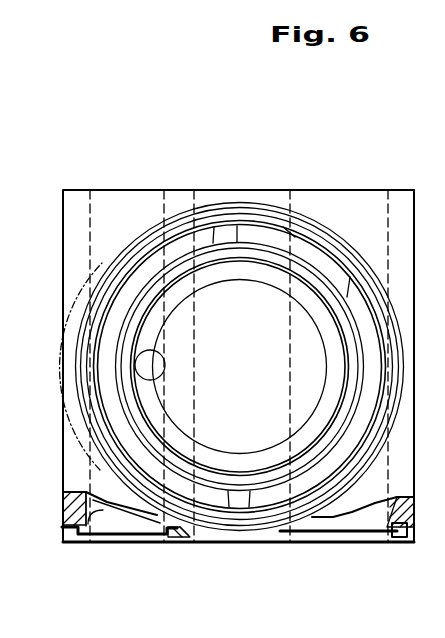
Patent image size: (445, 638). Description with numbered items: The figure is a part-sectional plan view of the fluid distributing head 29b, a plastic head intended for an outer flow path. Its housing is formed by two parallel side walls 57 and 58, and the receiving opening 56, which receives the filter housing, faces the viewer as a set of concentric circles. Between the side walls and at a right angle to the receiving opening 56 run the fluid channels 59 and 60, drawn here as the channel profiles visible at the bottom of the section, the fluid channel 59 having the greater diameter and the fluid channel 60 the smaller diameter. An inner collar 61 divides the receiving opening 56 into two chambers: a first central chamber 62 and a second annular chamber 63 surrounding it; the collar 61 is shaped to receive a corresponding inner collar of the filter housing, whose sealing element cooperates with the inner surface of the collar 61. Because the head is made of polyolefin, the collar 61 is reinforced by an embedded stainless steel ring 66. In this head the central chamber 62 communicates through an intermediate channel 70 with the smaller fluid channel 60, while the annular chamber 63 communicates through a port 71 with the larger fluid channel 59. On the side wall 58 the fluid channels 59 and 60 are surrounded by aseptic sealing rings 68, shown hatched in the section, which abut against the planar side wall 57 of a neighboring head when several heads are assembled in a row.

The fluid distributing head 29b is at (238, 304).
The receiving opening 56 is at (150, 250).
The side wall 57 is at (325, 189).
The side wall 58 is at (0, 224).
The fluid channel 59 is at (365, 545).
The fluid channel 60 is at (93, 543).
The collar 61 is at (128, 317).
The central chamber 62 is at (218, 272).
The annular chamber 63 is at (133, 282).
The stainless steel ring 66 is at (97, 456).
The aseptic sealing ring 68 is at (176, 545).
The intermediate channel 70 is at (148, 365).
The port 71 is at (268, 233).